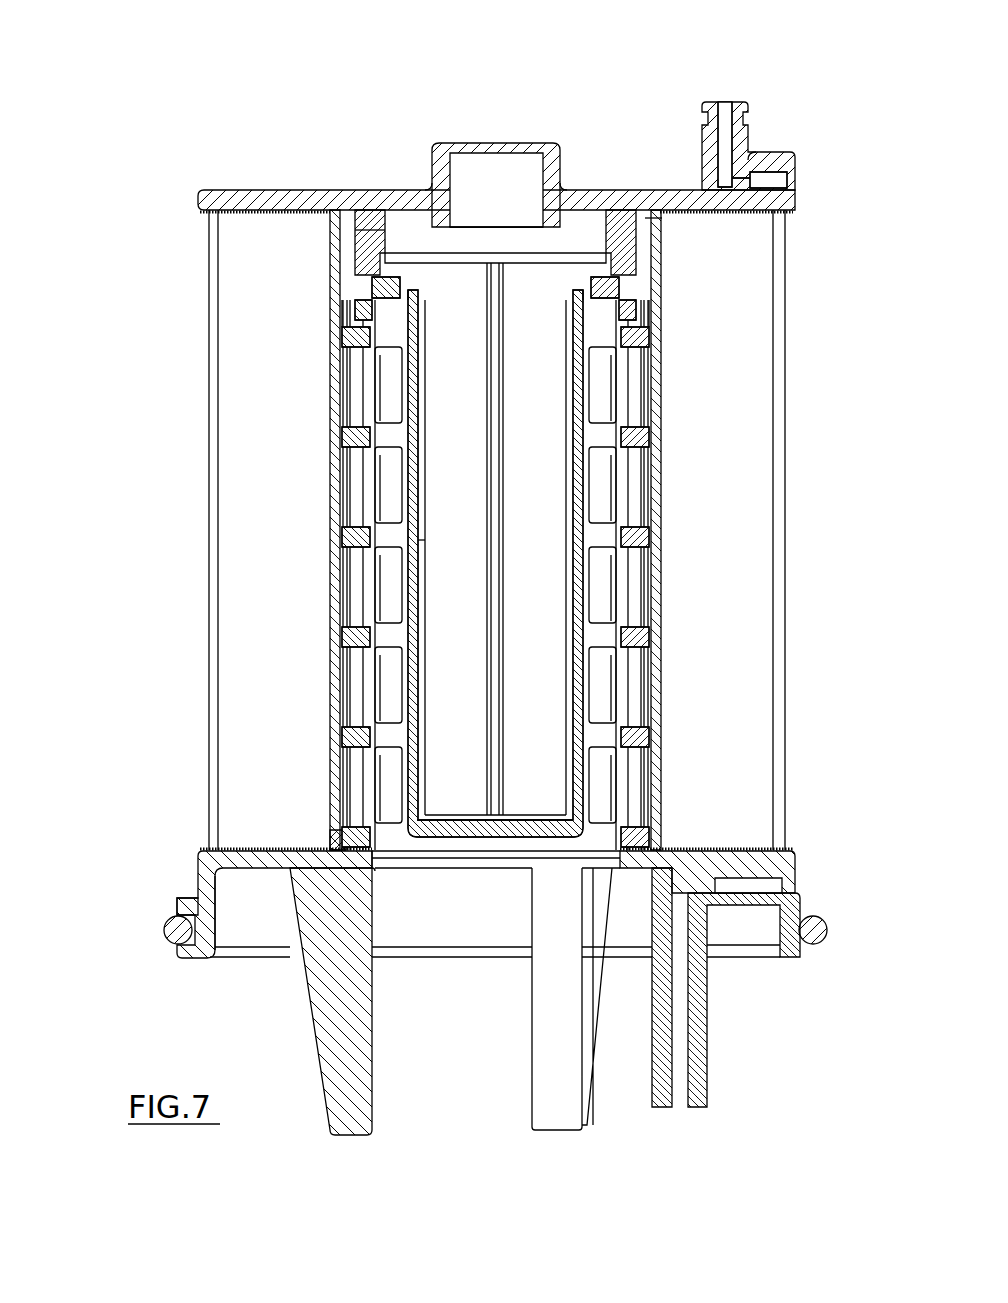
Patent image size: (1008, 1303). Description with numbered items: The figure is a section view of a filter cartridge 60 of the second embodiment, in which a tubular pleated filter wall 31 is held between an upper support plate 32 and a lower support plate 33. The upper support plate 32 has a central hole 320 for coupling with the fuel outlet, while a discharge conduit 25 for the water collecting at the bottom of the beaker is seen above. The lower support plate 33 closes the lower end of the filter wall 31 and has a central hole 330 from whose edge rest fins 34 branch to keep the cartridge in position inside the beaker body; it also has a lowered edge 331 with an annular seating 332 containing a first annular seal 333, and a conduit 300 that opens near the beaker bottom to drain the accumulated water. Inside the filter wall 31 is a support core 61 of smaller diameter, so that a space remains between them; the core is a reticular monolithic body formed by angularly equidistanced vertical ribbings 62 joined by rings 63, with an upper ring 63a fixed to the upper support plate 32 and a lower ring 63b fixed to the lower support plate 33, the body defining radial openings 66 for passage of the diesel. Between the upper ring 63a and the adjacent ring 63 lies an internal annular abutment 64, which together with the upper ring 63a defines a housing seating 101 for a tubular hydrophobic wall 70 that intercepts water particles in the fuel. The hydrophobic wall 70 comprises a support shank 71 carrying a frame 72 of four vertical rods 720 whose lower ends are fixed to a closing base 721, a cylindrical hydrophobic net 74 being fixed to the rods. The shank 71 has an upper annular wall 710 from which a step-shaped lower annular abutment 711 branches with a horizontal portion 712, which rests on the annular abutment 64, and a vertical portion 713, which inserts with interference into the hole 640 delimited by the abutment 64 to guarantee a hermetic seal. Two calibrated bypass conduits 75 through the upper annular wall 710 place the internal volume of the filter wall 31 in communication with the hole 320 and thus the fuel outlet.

The filter cartridge 60 is at (237, 110).
The upper support plate 32 is at (222, 187).
The discharge conduit 25 is at (750, 138).
The housing seating 101 is at (466, 252).
The central hole 320 is at (526, 170).
The support shank 71 is at (598, 222).
The bypass conduit 75 is at (383, 240).
The upper annular wall 710 is at (367, 252).
The horizontal portion 712 is at (395, 288).
The lower annular abutment 711 is at (385, 278).
The vertical portion 713 is at (365, 330).
The support core 61 is at (343, 460).
The hydrophobic wall 70 is at (408, 540).
The vertical ribbings 62 is at (355, 705).
The lower ring 63b is at (335, 836).
The lower support plate 33 is at (197, 861).
The first annular seal 333 is at (172, 928).
The annular seating 332 is at (170, 945).
The lowered edge 331 is at (225, 908).
The rest fins 34 is at (318, 1075).
The central hole 330 is at (380, 860).
The closing base 721 is at (493, 838).
The conduit 300 is at (705, 1060).
The filter wall 31 is at (288, 619).
The hydrophobic net 74 is at (553, 675).
The frame 72 is at (421, 656).
The vertical rods 720 is at (418, 468).
The upper ring 63a is at (642, 222).
The internal annular abutment 64 is at (622, 300).
The hole 640 is at (645, 375).
The radial openings 66 is at (598, 487).
The rings 63 is at (650, 528).